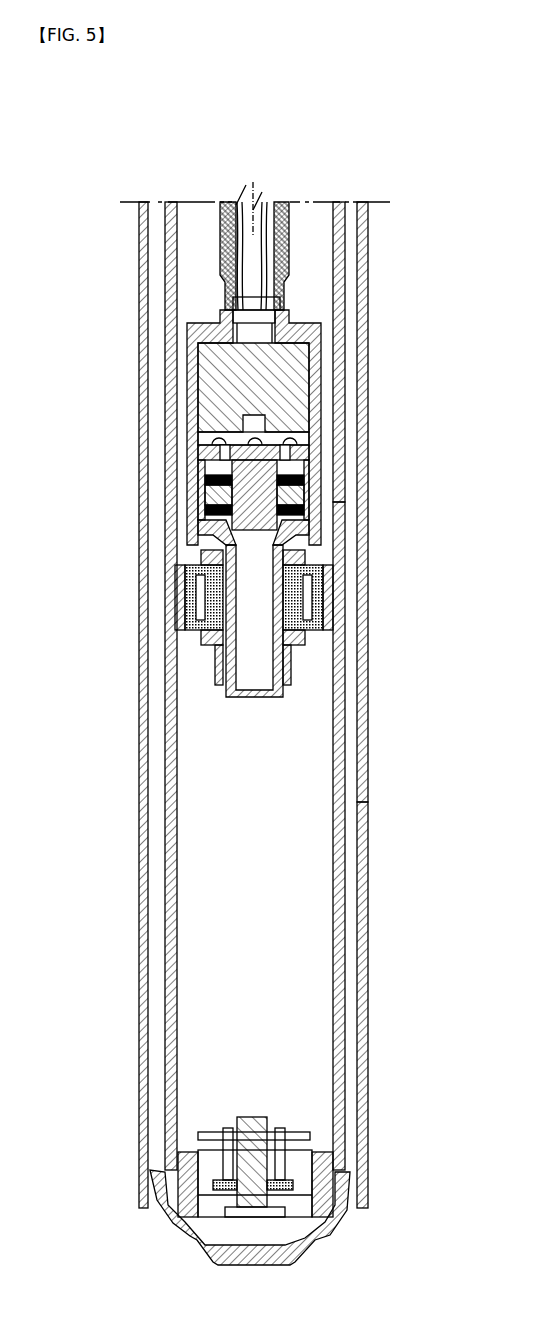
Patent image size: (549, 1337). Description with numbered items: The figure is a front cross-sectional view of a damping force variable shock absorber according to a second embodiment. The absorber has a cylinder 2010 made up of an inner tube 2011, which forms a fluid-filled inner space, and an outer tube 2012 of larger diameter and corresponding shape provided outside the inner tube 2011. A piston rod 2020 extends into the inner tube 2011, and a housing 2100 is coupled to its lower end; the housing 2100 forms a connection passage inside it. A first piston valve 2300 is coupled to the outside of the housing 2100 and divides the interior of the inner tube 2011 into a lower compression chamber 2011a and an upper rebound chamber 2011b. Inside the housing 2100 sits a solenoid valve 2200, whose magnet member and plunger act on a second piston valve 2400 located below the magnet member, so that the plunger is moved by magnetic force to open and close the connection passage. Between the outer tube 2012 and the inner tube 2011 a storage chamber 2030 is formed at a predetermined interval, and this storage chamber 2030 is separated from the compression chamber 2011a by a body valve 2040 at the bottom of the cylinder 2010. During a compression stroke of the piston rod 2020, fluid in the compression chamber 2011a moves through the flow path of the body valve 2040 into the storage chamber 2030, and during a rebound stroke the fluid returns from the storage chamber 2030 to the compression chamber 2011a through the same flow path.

The cylinder 2010 is at (310, 705).
The inner tube 2011 is at (319, 686).
The compression chamber 2011a is at (318, 845).
The rebound chamber 2011b is at (318, 250).
The outer tube 2012 is at (360, 364).
The piston rod 2020 is at (288, 197).
The storage chamber 2030 is at (350, 915).
The body valve 2040 is at (318, 1155).
The housing 2100 is at (189, 427).
The solenoid valve 2200 is at (190, 370).
The first piston valve 2300 is at (172, 597).
The second piston valve 2400 is at (190, 485).